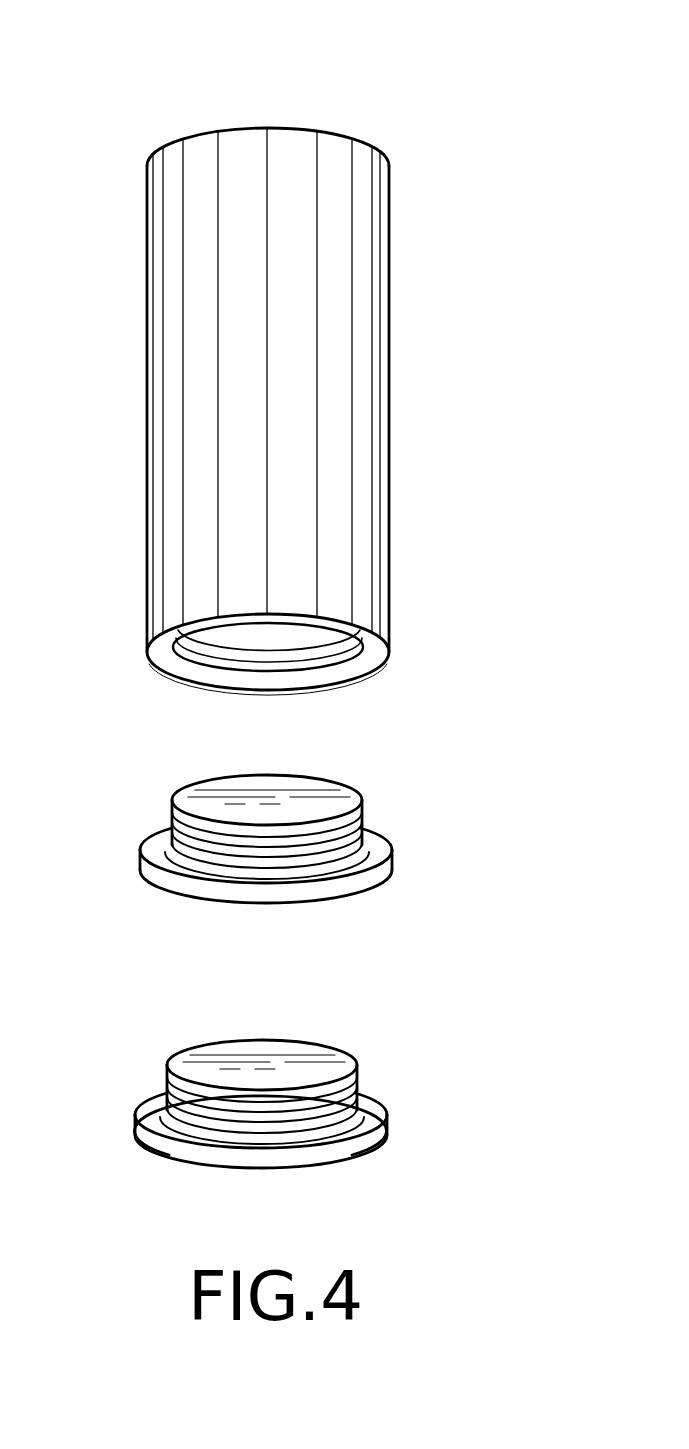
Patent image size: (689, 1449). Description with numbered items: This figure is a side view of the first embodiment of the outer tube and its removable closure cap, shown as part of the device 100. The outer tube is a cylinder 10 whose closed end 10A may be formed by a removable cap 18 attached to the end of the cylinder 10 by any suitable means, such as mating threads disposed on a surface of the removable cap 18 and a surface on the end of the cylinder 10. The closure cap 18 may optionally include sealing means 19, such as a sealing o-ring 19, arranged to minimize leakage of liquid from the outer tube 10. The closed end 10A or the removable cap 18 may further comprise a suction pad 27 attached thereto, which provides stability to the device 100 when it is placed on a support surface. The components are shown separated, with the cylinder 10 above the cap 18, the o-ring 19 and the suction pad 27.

The device 100 is at (300, 42).
The cylinder 10 is at (200, 367).
The closed end 10A is at (389, 632).
The removable cap 18 is at (392, 853).
The sealing o-ring 19 is at (367, 830).
The suction pad 27 is at (385, 1170).